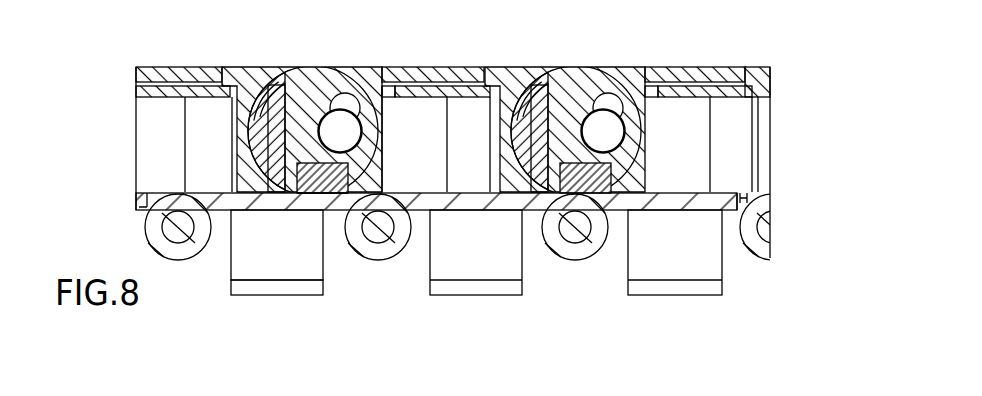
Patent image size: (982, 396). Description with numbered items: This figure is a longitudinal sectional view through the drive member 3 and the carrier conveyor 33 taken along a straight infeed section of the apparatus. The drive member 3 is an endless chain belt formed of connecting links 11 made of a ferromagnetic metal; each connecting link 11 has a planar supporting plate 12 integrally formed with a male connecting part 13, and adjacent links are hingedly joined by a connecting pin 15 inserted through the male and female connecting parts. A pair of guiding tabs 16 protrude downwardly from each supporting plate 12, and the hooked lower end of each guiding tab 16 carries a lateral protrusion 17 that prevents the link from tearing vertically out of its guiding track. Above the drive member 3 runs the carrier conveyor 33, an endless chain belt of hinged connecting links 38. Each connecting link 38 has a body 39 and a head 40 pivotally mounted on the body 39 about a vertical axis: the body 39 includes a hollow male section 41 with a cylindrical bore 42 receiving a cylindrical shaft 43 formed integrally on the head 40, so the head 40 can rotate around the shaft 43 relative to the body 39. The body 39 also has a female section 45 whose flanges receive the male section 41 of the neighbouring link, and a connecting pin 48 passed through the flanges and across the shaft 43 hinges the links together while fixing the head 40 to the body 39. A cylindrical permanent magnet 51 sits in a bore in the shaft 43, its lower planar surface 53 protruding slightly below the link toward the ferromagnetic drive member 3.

The drive member 3 is at (729, 213).
The connecting link 11 is at (726, 191).
The supporting plate 12 is at (681, 201).
The male connecting part 13 is at (575, 258).
The connecting pin 15 is at (572, 230).
The guiding tab 16 is at (283, 258).
The lateral protrusion 17 is at (265, 287).
The carrier conveyor 33 is at (762, 62).
The connecting link 38 is at (646, 64).
The body 39 is at (396, 100).
The head 40 is at (325, 78).
The male section 41 is at (270, 112).
The cylindrical bore 42 is at (382, 170).
The cylindrical shaft 43 is at (370, 135).
The female section 45 is at (565, 100).
The connecting pin 48 is at (340, 132).
The permanent magnet 51 is at (330, 170).
The lower planar surface 53 is at (322, 190).